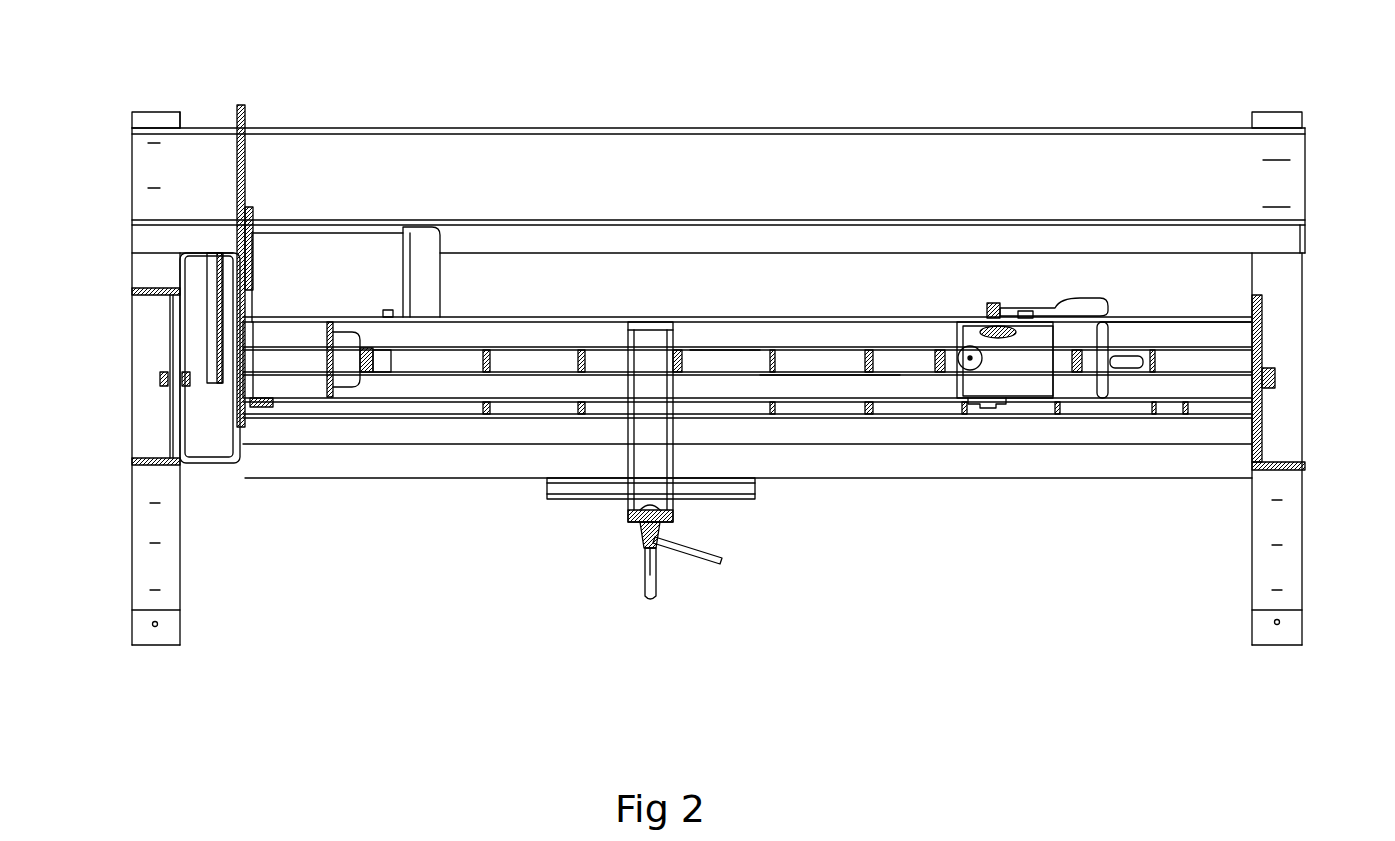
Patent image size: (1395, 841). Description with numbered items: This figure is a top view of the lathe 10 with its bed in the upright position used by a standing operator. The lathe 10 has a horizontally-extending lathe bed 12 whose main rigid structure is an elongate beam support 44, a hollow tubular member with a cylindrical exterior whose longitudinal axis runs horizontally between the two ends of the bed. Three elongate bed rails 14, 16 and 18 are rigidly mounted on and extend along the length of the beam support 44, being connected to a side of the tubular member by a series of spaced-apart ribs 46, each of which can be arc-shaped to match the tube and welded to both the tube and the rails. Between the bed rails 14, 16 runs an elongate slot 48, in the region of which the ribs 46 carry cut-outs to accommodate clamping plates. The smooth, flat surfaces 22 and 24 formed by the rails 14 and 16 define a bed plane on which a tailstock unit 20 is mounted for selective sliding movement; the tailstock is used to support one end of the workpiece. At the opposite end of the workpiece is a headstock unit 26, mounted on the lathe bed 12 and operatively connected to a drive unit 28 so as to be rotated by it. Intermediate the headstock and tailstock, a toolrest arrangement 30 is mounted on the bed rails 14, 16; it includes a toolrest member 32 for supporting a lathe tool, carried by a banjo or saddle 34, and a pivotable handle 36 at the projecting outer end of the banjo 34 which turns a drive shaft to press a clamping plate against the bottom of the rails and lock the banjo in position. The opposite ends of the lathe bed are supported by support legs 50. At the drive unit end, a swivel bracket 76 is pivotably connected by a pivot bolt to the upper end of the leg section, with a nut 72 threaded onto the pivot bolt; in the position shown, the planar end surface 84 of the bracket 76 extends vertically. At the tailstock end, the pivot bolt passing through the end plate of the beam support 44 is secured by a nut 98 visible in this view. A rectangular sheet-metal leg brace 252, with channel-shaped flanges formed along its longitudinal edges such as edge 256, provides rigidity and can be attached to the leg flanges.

The lathe 10 is at (855, 92).
The longitudinal edge of leg brace 256 is at (803, 128).
The leg brace 252 is at (808, 191).
The support legs 50 is at (176, 545).
The planar end surface of bracket 84 is at (190, 465).
The swivel bracket 76 is at (215, 462).
The nut 72 is at (165, 372).
The drive unit 28 is at (305, 268).
The lathe bed 12 is at (510, 332).
The elongate slot 48 is at (560, 362).
The beam support 44 is at (705, 362).
The bed rail 14 is at (770, 335).
The bed rail 16 is at (823, 388).
The bed rail 18 is at (875, 425).
The flat surface 22 is at (1140, 335).
The nut 98 is at (1272, 375).
The headstock unit 26 is at (343, 340).
The tailstock unit 20 is at (1022, 385).
The ribs 46 is at (975, 405).
The flat surface 24 is at (1182, 385).
The toolrest arrangement 30 is at (672, 450).
The banjo 34 is at (648, 426).
The toolrest member 32 is at (725, 497).
The pivotable handle 36 is at (680, 548).